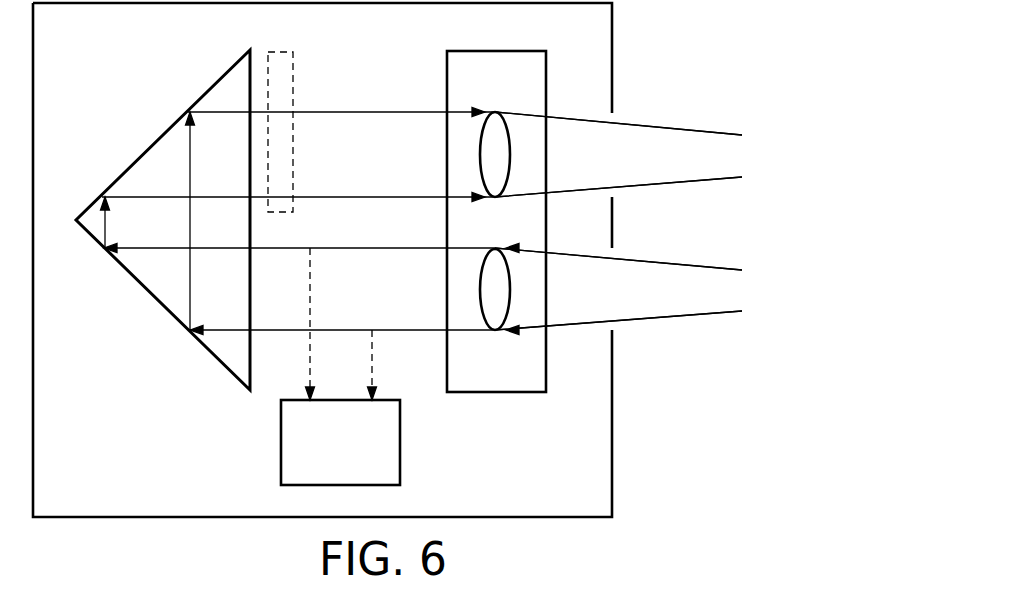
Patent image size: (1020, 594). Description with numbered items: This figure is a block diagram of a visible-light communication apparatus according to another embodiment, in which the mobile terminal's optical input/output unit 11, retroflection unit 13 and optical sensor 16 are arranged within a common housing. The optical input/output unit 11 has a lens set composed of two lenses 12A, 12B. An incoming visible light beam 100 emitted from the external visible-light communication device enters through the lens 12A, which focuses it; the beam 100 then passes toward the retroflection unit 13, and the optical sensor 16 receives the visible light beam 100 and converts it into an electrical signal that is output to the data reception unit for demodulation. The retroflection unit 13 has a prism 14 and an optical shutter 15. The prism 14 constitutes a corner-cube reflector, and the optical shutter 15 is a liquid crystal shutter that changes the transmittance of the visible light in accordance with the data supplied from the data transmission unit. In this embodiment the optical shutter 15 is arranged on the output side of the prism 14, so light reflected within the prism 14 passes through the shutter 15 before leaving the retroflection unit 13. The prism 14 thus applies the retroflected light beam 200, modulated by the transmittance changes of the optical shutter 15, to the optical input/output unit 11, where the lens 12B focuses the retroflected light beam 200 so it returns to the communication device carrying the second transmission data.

The optical input/output unit 11 is at (497, 393).
The lens 12A is at (510, 290).
The lens 12B is at (510, 155).
The retroflection unit 13 is at (112, 87).
The prism 14 is at (130, 165).
The optical shutter 15 is at (294, 68).
The optical sensor 16 is at (390, 400).
The visible light beam 100 is at (655, 262).
The retroflected light beam 200 is at (655, 126).